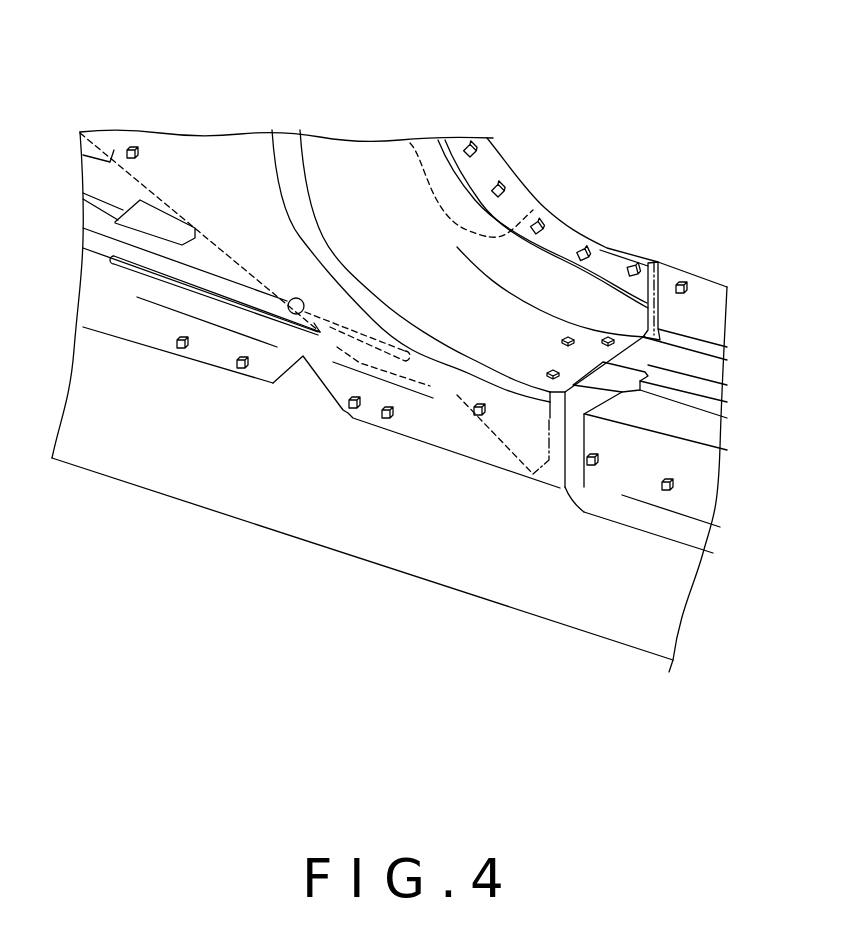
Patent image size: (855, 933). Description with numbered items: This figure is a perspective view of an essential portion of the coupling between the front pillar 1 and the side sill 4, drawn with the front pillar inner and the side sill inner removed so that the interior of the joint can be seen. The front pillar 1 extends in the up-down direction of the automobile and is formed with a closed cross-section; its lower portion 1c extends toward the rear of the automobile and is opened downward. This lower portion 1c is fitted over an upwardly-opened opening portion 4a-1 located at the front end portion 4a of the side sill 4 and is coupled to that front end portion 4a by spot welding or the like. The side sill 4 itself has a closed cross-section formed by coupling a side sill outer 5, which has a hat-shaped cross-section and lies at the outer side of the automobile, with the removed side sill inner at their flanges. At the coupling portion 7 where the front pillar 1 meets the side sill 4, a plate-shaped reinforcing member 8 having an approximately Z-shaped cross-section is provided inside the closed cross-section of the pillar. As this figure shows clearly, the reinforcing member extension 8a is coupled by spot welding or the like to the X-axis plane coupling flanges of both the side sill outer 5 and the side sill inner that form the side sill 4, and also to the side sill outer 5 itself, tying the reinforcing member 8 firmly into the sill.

The front pillar 1 is at (389, 101).
The lower portion 1c is at (446, 398).
The side sill 4 is at (444, 600).
The front end portion 4a is at (122, 334).
The opening portion 4a-1 is at (300, 300).
The side sill outer 5 is at (610, 607).
The coupling portion 7 is at (168, 355).
The reinforcing member 8 is at (242, 234).
The reinforcing member extension 8a is at (557, 330).